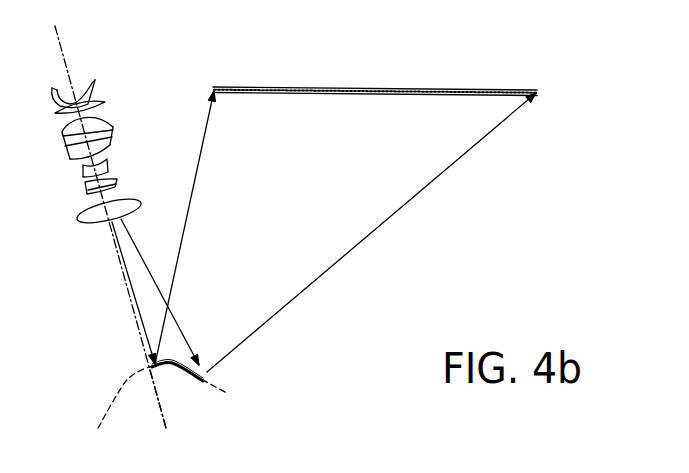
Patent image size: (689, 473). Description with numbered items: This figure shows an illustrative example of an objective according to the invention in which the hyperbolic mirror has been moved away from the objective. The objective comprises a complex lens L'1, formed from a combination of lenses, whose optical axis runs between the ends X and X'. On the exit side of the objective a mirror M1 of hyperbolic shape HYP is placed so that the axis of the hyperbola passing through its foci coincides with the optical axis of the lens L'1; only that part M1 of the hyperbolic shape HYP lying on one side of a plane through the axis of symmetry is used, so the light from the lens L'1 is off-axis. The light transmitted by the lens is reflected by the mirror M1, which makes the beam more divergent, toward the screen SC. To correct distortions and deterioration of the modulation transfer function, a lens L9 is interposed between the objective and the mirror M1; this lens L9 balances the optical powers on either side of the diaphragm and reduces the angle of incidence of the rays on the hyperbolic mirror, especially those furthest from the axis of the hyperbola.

The lens L'1 is at (58, 146).
The lens L9 is at (82, 224).
The mirror M1 is at (177, 377).
The screen SC is at (400, 97).
The hyperbolic shape HYP is at (188, 400).
The optical axis X is at (108, 218).
The optical axis X' is at (162, 411).